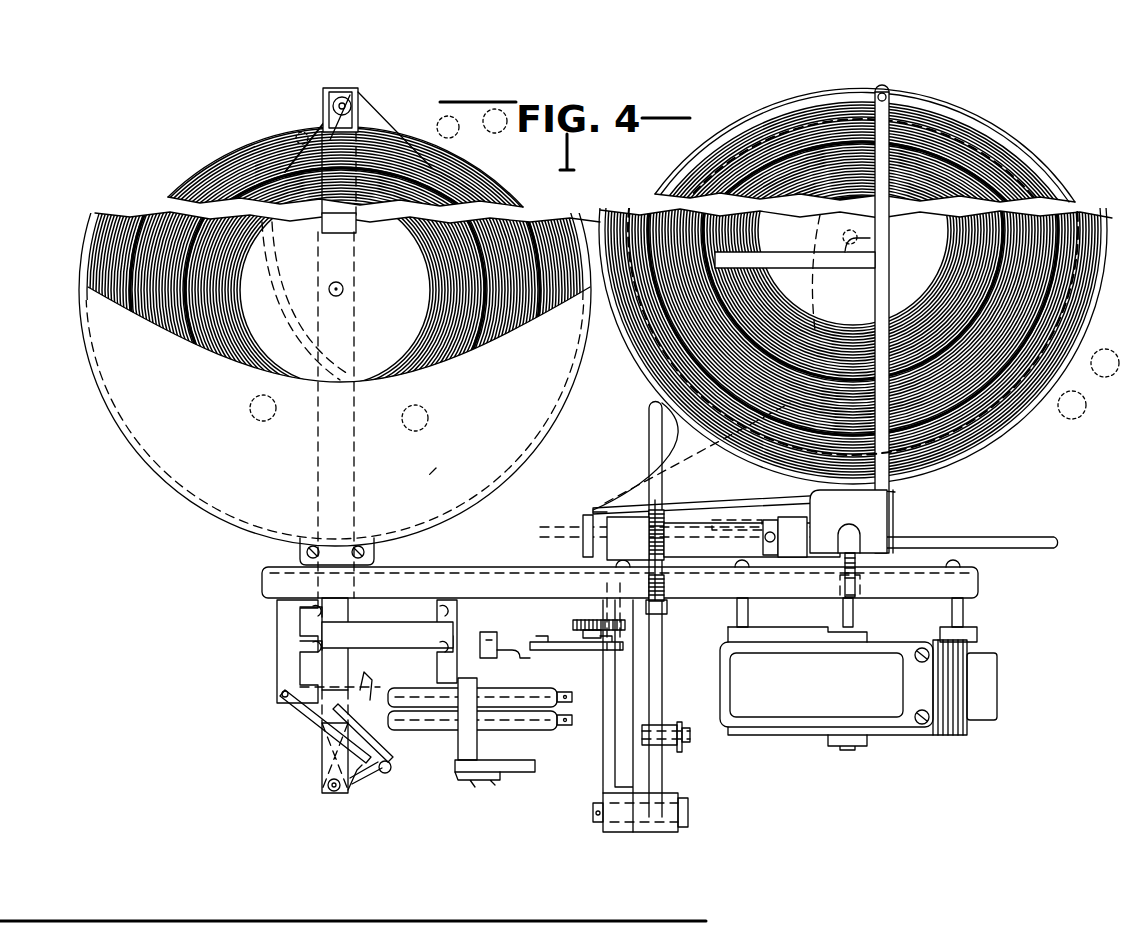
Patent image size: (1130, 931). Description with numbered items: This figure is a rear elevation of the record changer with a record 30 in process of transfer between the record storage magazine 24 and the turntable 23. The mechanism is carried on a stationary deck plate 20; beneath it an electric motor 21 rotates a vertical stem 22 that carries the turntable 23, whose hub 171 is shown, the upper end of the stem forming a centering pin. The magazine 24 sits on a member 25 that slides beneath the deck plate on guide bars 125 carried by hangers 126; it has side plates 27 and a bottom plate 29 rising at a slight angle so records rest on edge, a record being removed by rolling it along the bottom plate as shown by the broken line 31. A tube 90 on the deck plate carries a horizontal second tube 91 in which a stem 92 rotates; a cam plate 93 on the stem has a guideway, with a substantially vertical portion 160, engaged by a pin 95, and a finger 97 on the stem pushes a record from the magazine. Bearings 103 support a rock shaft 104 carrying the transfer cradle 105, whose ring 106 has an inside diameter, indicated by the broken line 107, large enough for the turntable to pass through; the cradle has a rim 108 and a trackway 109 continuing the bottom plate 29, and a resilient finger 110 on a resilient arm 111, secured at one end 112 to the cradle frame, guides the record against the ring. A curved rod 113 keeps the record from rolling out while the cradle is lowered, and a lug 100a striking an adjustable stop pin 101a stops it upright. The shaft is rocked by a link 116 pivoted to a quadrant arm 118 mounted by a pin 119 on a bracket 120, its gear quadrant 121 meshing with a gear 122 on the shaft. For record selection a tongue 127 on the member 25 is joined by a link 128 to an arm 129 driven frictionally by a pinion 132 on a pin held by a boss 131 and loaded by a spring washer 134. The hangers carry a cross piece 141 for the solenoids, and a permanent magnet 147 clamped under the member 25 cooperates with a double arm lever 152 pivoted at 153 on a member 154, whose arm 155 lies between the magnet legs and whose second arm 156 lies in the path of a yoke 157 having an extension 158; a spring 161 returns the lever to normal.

The deck plate 20 is at (977, 589).
The electric motor 21 is at (890, 708).
The vertical stem 22 is at (853, 616).
The turntable 23 is at (1046, 538).
The record storage magazine 24 is at (339, 358).
The member 25 is at (340, 605).
The side plates 27 is at (180, 485).
The bottom plate 29 is at (137, 441).
The record 30 is at (100, 226).
The broken line 31 is at (436, 470).
The tube 90 is at (357, 207).
The second tube 91 is at (323, 100).
The stem 92 is at (332, 108).
The cam plate 93 is at (378, 116).
The pin 95 is at (400, 142).
The finger 97 is at (296, 138).
The lug 100a is at (843, 554).
The adjustable stop pin 101a is at (858, 556).
The bearings 103 is at (600, 548).
The rock shaft 104 is at (735, 535).
The transfer cradle 105 is at (897, 496).
The ring 106 is at (1050, 386).
The broken line 107 is at (1045, 347).
The rim 108 is at (1012, 430).
The trackway 109 is at (716, 500).
The resilient finger 110 is at (779, 258).
The resilient arm 111 is at (889, 302).
The end 112 is at (887, 519).
The curved rod 113 is at (649, 426).
The link 116 is at (676, 724).
The quadrant arm 118 is at (664, 768).
The pin 119 is at (690, 811).
The bracket 120 is at (606, 748).
The gear quadrant 121 is at (668, 600).
The gear 122 is at (666, 523).
The guide bars 125 is at (312, 646).
The hangers 126 is at (278, 610).
The tongue 127 is at (498, 637).
The link 128 is at (513, 657).
The arm 129 is at (569, 650).
The boss 131 is at (583, 606).
The pinion 132 is at (575, 624).
The spring washer 134 is at (592, 619).
The cross piece 141 is at (462, 726).
The permanent magnet 147 is at (300, 726).
The double arm lever 152 is at (355, 782).
The pivotal mounting 153 is at (330, 790).
The member 154 is at (325, 746).
The arm 155 is at (368, 680).
The second arm 156 is at (384, 772).
The yoke 157 is at (368, 749).
The extension 158 is at (392, 765).
The vertical portion 160 is at (423, 168).
The spring 161 is at (316, 735).
The hub 171 is at (878, 562).